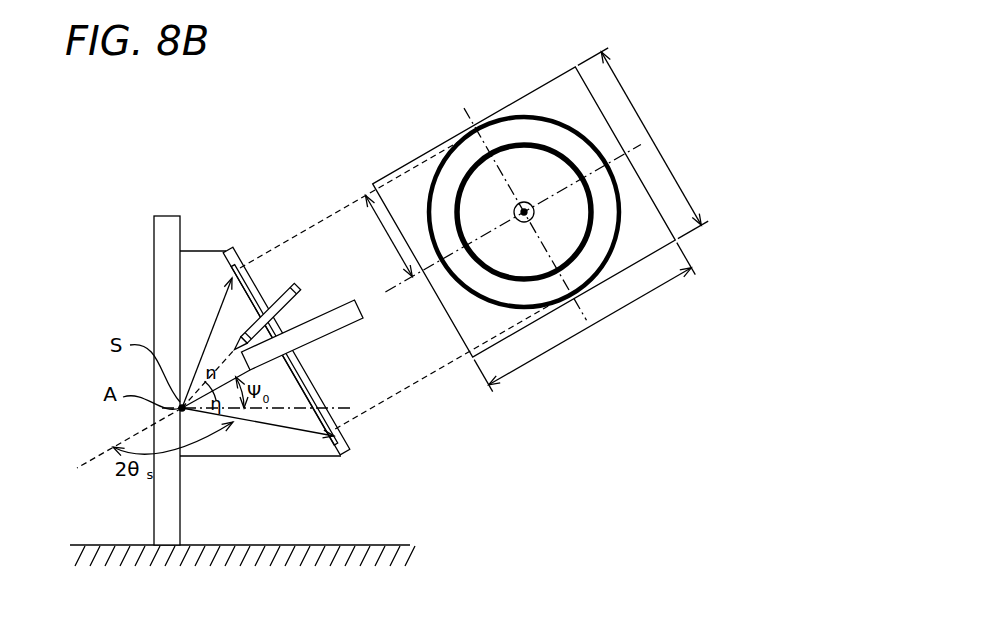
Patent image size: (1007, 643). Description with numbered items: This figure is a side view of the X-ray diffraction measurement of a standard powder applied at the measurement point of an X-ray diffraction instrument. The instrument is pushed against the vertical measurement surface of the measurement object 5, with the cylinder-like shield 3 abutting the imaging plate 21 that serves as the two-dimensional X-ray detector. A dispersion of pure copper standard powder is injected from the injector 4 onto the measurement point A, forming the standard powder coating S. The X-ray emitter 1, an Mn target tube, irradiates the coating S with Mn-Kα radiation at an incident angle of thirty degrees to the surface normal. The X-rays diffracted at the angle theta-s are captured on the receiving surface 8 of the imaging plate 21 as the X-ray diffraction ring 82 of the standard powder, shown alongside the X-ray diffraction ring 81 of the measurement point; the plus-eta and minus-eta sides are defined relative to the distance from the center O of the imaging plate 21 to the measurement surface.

The X-ray emitter 1 is at (323, 337).
The cylinder-like shield 3 is at (197, 246).
The injector 4 is at (298, 283).
The measurement object 5 is at (155, 236).
The receiving surface 8 is at (552, 80).
The imaging plate 21 is at (328, 400).
The X-ray diffraction ring of the measurement point 81 is at (529, 148).
The X-ray diffraction ring of the standard powder 82 is at (512, 118).